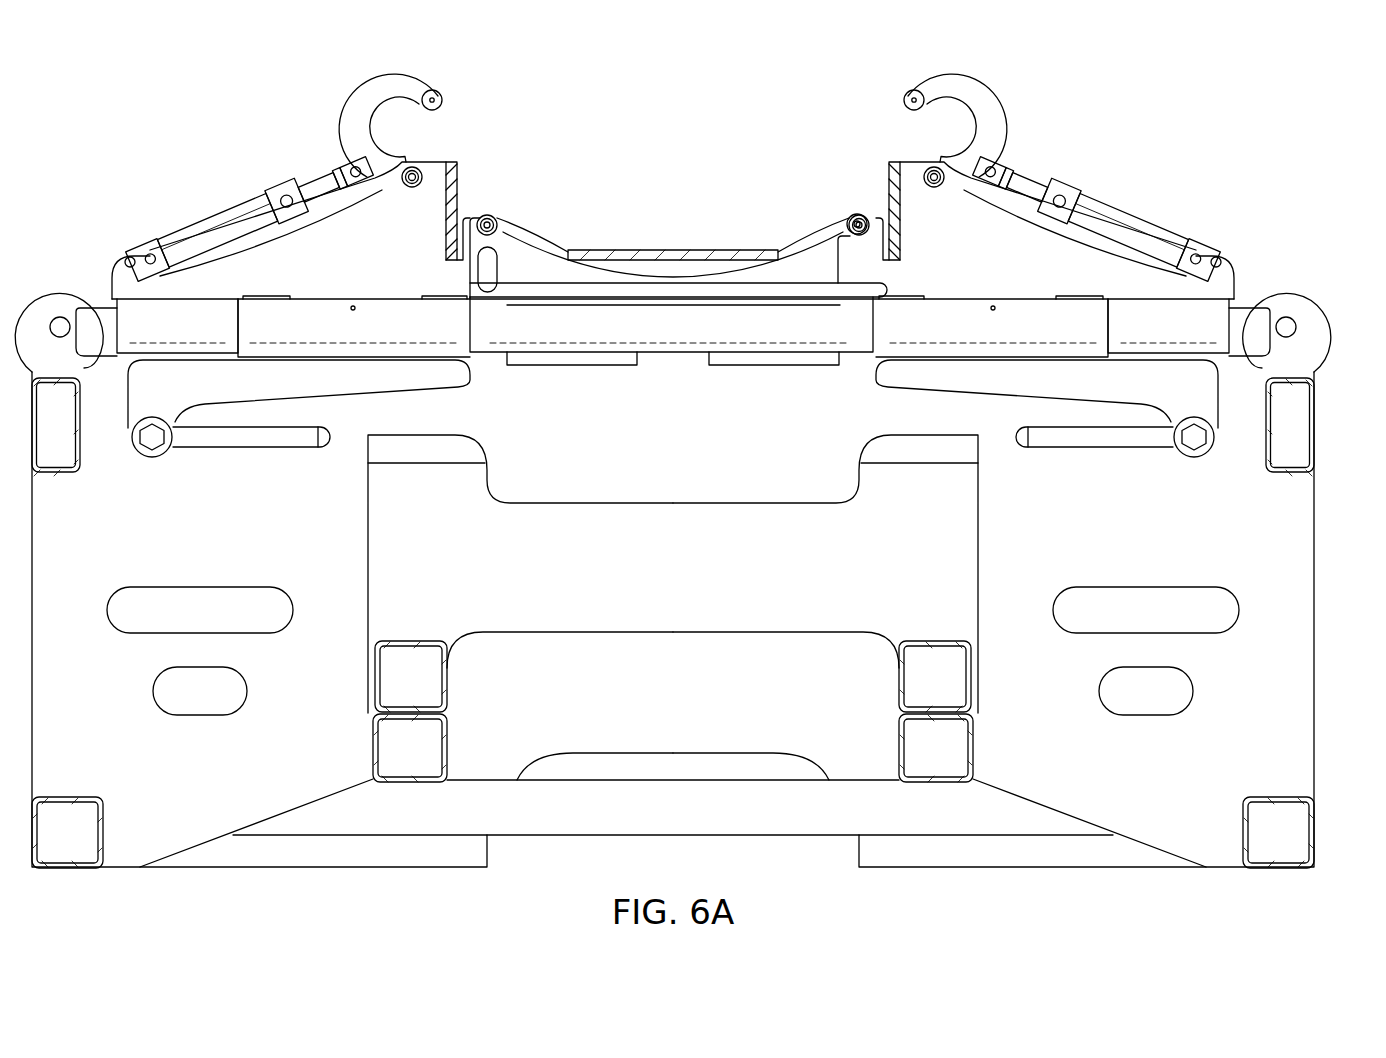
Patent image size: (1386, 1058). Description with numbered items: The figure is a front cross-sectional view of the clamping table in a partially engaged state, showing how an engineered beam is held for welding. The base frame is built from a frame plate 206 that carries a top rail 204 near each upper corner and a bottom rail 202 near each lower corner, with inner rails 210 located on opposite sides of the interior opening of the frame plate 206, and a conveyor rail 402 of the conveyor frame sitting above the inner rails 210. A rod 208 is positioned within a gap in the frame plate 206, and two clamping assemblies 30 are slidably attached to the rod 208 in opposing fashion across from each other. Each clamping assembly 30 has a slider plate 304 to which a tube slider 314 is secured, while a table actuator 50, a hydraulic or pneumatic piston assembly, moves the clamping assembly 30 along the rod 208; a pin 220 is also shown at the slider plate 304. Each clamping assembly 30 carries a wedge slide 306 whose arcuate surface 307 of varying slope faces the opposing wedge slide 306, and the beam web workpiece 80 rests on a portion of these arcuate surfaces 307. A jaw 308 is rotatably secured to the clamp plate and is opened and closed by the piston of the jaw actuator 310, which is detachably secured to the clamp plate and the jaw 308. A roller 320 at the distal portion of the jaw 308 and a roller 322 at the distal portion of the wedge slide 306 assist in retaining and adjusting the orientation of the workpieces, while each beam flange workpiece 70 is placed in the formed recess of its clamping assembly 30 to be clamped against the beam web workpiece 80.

The clamping assembly 30 is at (285, 124).
The table actuator 50 is at (124, 366).
The beam flange workpiece 70 is at (462, 178).
The beam web workpiece 80 is at (672, 250).
The bottom rail 202 is at (70, 869).
The top rail 204 is at (68, 472).
The frame plate 206 is at (1307, 668).
The rod 208 is at (673, 366).
The inner rail 210 is at (447, 732).
The pin 220 is at (265, 446).
The slider plate 304 is at (423, 380).
The wedge slide 306 is at (556, 305).
The arcuate surface 307 is at (516, 228).
The jaw 308 is at (392, 76).
The jaw actuator 310 is at (229, 204).
The tube slider 314 is at (383, 306).
The roller 320 is at (910, 92).
The roller 322 is at (857, 214).
The conveyor rail 402 is at (421, 641).